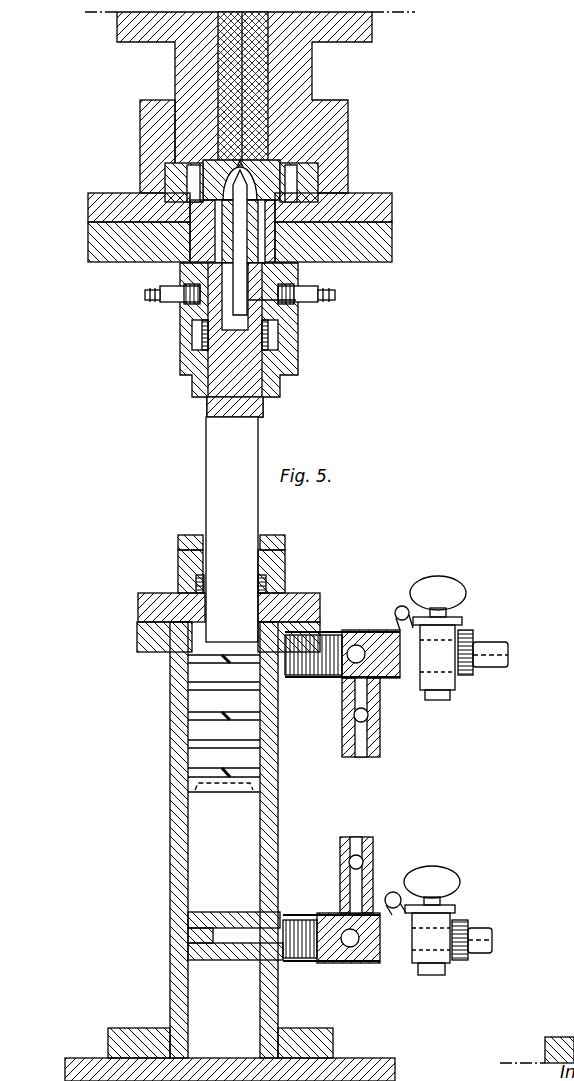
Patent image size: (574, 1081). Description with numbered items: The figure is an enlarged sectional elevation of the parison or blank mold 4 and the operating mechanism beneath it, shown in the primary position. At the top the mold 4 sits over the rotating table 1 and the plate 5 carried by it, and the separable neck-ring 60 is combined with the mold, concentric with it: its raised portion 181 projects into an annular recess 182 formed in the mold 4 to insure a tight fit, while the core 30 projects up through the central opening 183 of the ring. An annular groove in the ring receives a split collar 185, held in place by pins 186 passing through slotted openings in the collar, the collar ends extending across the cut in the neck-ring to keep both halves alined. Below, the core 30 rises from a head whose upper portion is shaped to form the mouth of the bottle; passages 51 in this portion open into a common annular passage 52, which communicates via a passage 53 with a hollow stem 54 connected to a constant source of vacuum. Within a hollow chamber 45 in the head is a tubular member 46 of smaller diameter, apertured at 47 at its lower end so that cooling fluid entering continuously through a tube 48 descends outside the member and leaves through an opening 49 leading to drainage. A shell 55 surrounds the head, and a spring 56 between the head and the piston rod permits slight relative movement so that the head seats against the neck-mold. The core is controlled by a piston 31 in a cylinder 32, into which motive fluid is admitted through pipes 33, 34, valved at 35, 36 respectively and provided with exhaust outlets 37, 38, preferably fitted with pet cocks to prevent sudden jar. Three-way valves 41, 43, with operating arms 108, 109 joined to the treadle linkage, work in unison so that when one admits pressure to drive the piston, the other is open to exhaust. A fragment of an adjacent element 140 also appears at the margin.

The parison mold 4 is at (180, 60).
The central opening 183 is at (160, 130).
The raised portion 181 is at (197, 143).
The annular recess 182 is at (345, 108).
The core 30 is at (295, 153).
The neck-ring 60 is at (310, 167).
The pins 186 is at (168, 166).
The split collar 185 is at (160, 173).
The passages 51 is at (140, 193).
The plate 5 is at (387, 197).
The annular passage 52 is at (200, 225).
The rotating table 1 is at (387, 238).
The passage 53 is at (225, 230).
The hollow stem 54 is at (145, 293).
The hollow chamber 45 is at (245, 250).
The tubular member 46 is at (300, 272).
The tube 48 is at (330, 295).
The aperture 47 is at (292, 312).
The opening 49 is at (288, 330).
The spring 56 is at (295, 357).
The shell 55 is at (295, 377).
The piston 31 is at (208, 702).
The cylinder 32 is at (182, 815).
The three-way valve 43 is at (360, 640).
The operating arm 109 is at (398, 604).
The valve 36 is at (445, 642).
The pipe 34 is at (503, 657).
The exhaust outlet 38 is at (372, 745).
The exhaust outlet 37 is at (358, 845).
The operating arm 108 is at (395, 887).
The three-way valve 41 is at (353, 947).
The valve 35 is at (425, 940).
The pipe 33 is at (483, 943).
The lever 140 is at (555, 890).